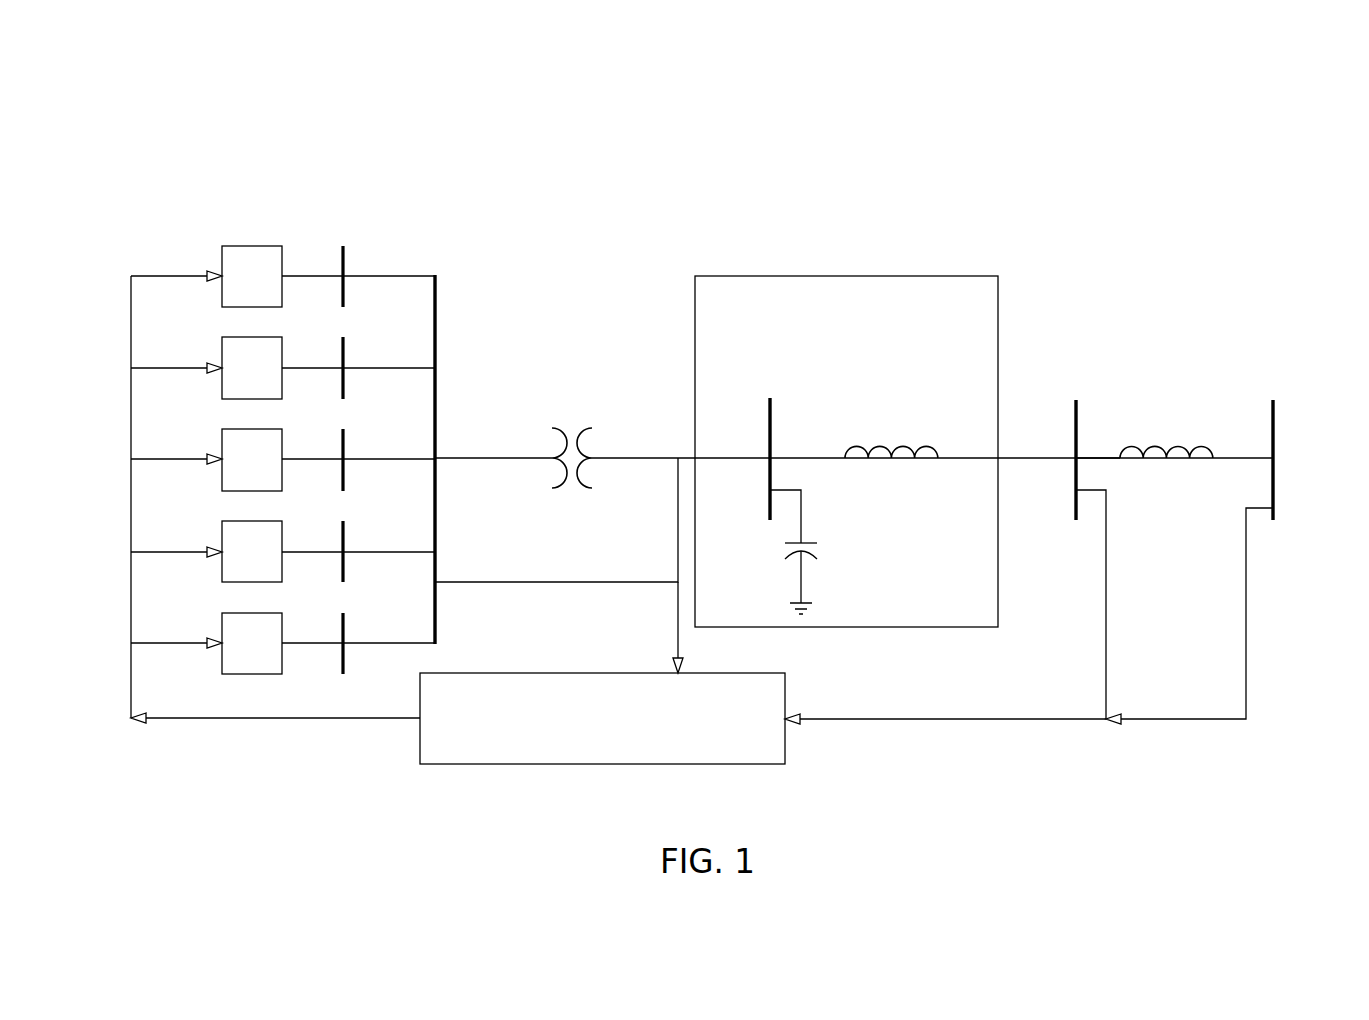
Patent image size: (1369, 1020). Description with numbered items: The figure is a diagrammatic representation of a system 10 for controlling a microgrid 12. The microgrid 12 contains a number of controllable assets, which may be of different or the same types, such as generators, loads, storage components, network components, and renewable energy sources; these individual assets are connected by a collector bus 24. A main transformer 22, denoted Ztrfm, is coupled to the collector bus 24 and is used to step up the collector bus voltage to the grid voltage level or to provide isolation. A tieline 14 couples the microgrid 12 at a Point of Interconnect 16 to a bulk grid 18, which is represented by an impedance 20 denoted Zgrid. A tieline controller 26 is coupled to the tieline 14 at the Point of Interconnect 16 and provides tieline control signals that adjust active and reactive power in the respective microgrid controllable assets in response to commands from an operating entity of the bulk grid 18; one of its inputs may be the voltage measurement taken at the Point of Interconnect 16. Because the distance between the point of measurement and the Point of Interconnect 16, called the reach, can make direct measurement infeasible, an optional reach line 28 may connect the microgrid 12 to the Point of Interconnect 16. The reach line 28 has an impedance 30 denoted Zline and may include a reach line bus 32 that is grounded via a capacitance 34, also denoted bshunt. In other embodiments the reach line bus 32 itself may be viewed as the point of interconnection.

The system 10 is at (1270, 105).
The microgrid 12 is at (447, 178).
The tieline 14 is at (1097, 458).
The point of interconnect 16 is at (1073, 435).
The bulk grid 18 is at (1276, 420).
The impedance 20 is at (1180, 447).
The main transformer 22 is at (557, 479).
The collector bus 24 is at (437, 313).
The tieline controller 26 is at (465, 765).
The reach line 28 is at (917, 383).
The reach line impedance 30 is at (857, 447).
The reach line bus 32 is at (768, 411).
The capacitance 34 is at (808, 543).